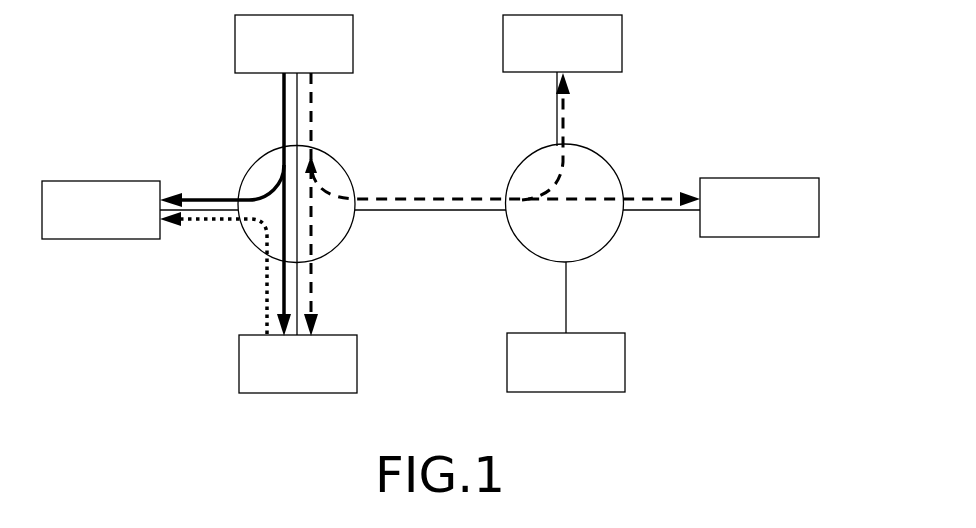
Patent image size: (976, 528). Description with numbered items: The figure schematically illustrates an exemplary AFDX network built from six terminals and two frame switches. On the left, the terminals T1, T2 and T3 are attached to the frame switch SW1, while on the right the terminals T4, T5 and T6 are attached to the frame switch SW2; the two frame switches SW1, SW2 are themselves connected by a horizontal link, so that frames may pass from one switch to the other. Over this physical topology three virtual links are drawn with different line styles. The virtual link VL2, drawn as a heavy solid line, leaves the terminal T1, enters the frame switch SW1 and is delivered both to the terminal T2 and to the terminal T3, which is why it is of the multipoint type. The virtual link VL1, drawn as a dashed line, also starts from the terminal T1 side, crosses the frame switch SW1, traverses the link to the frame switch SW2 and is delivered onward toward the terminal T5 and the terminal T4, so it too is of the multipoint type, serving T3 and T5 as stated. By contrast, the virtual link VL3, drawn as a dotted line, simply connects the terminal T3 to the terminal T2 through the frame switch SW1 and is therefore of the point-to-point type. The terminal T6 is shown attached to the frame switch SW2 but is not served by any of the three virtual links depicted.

The terminal T1 is at (294, 44).
The terminal T2 is at (101, 210).
The terminal T3 is at (298, 364).
The terminal T4 is at (562, 43).
The terminal T5 is at (759, 207).
The terminal T6 is at (566, 362).
The frame switch SW1 is at (312, 219).
The frame switch SW2 is at (574, 214).
The virtual link VL1 is at (506, 139).
The virtual link VL2 is at (222, 168).
The virtual link VL3 is at (213, 273).